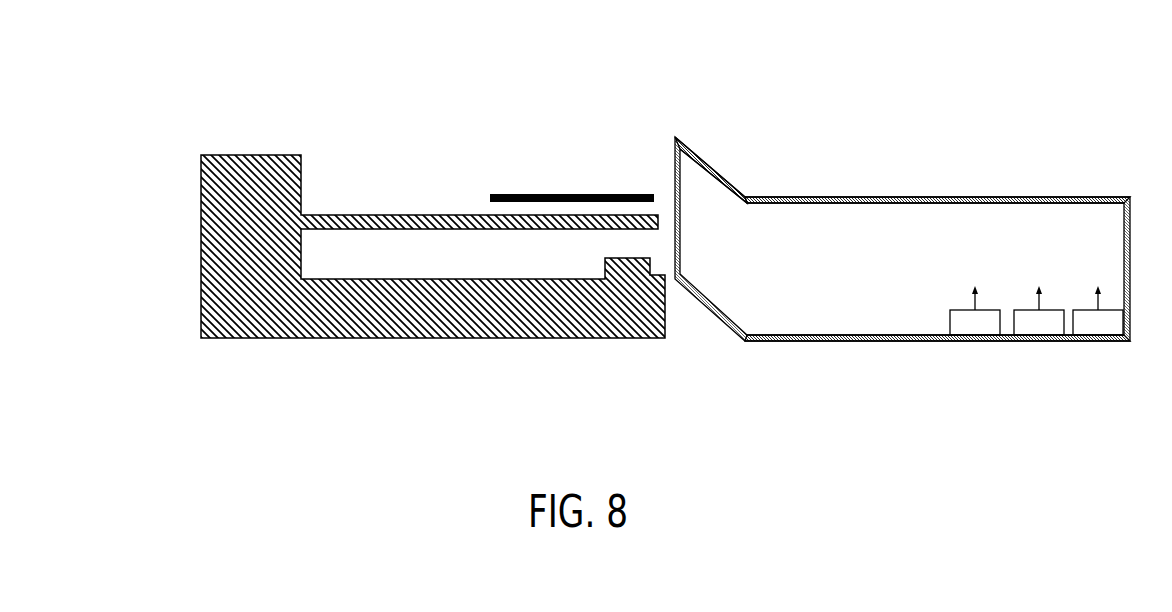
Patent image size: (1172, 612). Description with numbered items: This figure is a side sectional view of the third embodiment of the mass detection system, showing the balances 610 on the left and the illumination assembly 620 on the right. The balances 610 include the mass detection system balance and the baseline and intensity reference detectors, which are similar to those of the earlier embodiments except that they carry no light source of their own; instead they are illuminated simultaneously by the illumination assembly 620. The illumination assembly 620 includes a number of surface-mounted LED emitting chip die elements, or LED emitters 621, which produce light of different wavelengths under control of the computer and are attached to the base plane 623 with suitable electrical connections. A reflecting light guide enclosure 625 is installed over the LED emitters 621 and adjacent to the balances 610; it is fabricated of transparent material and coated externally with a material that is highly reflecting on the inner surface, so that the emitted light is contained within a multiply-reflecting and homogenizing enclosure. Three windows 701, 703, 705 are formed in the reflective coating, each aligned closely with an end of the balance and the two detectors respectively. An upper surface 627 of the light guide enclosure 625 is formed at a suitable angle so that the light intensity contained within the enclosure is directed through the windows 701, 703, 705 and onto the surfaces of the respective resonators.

The balances 610 is at (227, 133).
The illumination assembly 620 is at (735, 73).
The LED emitters 621 is at (1095, 340).
The base plane 623 is at (829, 341).
The reflecting light guide enclosure 625 is at (930, 197).
The upper surface 627 is at (703, 155).
The window 701 is at (677, 170).
The window 703 is at (572, 198).
The window 705 is at (572, 198).